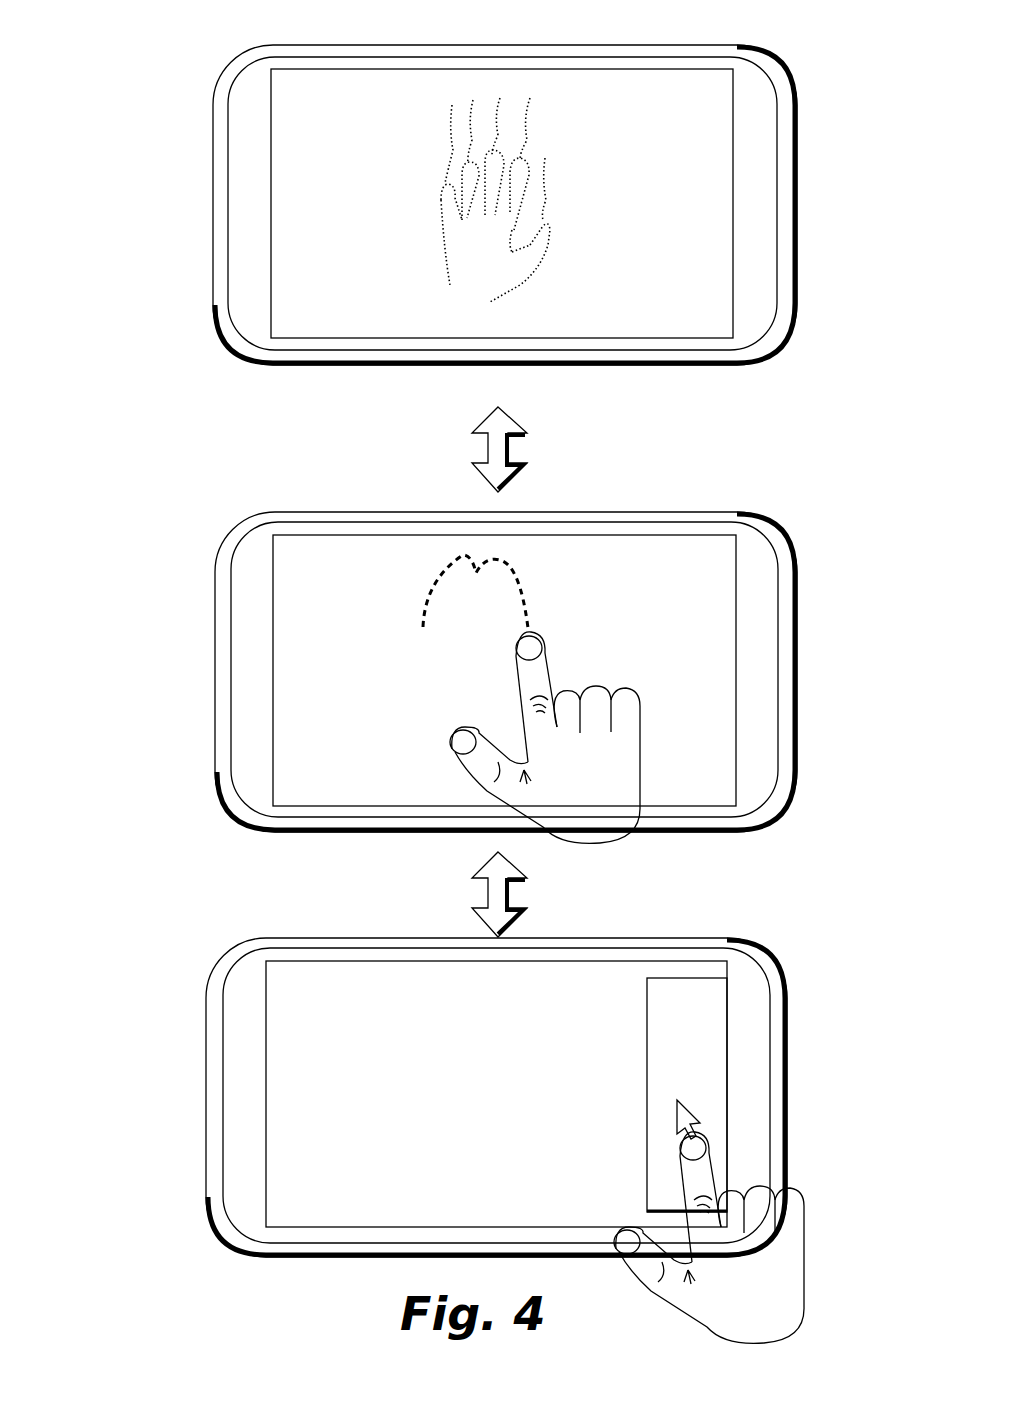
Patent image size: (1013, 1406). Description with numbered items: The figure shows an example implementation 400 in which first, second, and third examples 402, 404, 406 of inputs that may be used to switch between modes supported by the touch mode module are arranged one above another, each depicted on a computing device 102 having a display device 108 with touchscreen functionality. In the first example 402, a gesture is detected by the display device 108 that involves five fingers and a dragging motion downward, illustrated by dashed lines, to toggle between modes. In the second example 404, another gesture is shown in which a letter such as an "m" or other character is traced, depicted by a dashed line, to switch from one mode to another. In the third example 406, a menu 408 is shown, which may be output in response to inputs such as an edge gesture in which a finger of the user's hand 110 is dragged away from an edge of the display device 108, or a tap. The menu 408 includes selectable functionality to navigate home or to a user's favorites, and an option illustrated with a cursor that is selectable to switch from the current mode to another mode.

The example implementation 400 is at (144, 66).
The first example 402 is at (173, 206).
The second example 404 is at (173, 676).
The third example 406 is at (173, 1101).
The computing device 102 is at (795, 192).
The display device 108 is at (323, 328).
The user's hand 110 is at (562, 789).
The menu 408 is at (647, 1095).